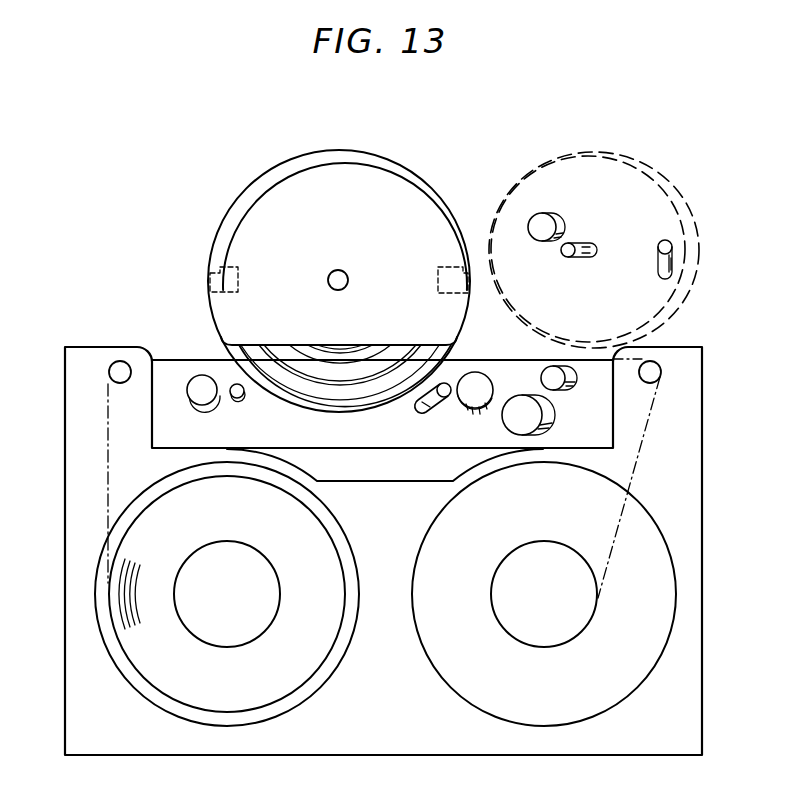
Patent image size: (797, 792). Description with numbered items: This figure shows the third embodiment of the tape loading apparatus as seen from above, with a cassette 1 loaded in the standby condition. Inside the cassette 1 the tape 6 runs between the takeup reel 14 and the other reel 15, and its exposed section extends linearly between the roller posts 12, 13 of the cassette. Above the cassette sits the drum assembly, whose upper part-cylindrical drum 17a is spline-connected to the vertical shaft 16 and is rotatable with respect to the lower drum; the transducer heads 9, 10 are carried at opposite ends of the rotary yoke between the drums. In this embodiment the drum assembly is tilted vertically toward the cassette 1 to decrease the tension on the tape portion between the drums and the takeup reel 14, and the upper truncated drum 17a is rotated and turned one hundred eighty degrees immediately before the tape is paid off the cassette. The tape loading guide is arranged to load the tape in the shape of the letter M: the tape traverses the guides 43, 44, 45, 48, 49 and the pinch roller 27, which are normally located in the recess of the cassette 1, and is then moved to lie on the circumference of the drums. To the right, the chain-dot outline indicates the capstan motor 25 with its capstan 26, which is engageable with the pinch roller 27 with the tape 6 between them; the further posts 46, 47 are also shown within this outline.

The cassette 1 is at (78, 482).
The tape 6 is at (107, 438).
The transducer head 9 is at (227, 267).
The transducer head 10 is at (453, 221).
The roller post 12 is at (662, 372).
The roller post 13 is at (108, 372).
The takeup reel 14 is at (110, 660).
The take-up reel 15 is at (677, 602).
The shaft 16 is at (338, 270).
The upper part-cylindrical drum 17a is at (405, 198).
The capstan motor 25 is at (598, 160).
The capstan 26 is at (583, 243).
The pinch roller 27 is at (553, 412).
The tape guide 43 is at (475, 400).
The tape guide 44 is at (196, 393).
The tape guide 45 is at (544, 376).
The guide post 46 is at (541, 217).
The guide pin 47 is at (665, 241).
The tape guide 48 is at (240, 401).
The tape guide 49 is at (420, 405).